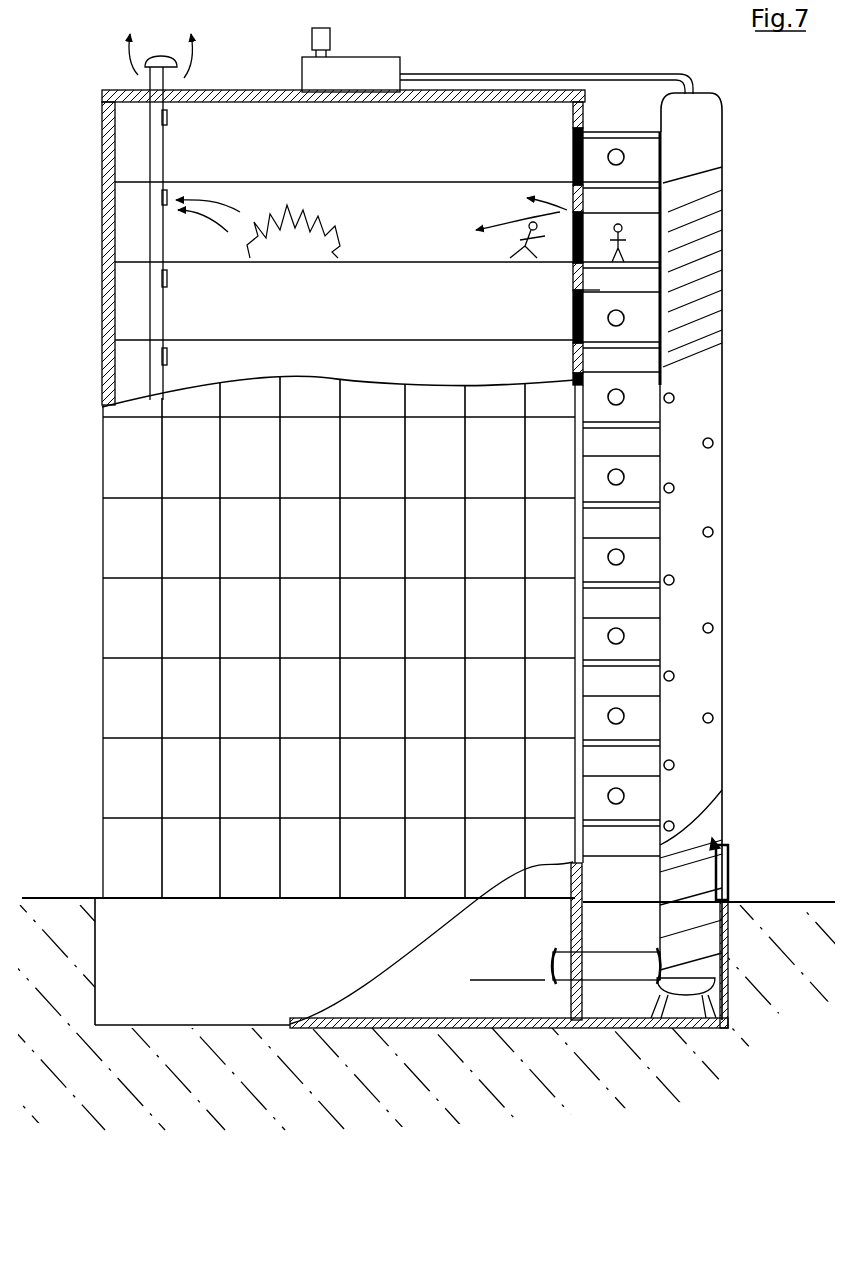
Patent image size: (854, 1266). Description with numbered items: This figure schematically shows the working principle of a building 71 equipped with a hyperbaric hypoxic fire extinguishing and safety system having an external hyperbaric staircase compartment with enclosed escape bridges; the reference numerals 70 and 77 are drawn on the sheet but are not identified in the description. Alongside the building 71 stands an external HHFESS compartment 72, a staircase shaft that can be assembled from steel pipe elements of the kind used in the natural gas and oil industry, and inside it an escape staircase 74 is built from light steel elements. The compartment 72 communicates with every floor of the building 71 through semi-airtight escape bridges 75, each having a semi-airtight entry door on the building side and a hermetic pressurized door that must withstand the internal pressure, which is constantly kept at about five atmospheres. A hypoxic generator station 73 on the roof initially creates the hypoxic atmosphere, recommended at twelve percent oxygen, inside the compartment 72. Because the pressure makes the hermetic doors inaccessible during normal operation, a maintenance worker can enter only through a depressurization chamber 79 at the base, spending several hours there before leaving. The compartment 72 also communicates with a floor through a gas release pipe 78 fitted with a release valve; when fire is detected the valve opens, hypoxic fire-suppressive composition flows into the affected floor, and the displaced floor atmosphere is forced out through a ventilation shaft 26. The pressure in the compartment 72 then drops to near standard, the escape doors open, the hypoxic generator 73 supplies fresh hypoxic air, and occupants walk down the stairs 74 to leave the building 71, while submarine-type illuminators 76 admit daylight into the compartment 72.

The building 70 is at (88, 394).
The building 71 is at (193, 90).
The ventilation shaft 26 is at (160, 170).
The hypoxic generator station 73 is at (328, 72).
The pipe 77 is at (520, 80).
The external HHFESS compartment 72 is at (691, 556).
The escape staircase 74 is at (683, 262).
The semi-airtight escape bridges 75 is at (574, 237).
The submarine-type illuminators 76 is at (676, 498).
The gas release pipe 78 is at (573, 380).
The depressurization chamber 79 is at (573, 967).